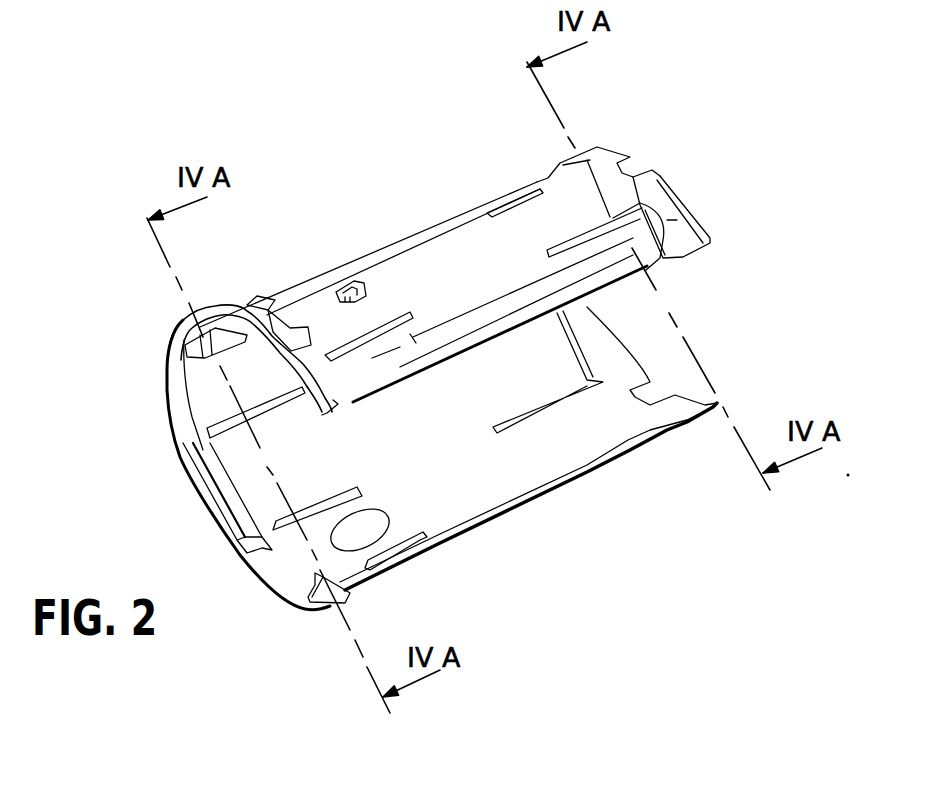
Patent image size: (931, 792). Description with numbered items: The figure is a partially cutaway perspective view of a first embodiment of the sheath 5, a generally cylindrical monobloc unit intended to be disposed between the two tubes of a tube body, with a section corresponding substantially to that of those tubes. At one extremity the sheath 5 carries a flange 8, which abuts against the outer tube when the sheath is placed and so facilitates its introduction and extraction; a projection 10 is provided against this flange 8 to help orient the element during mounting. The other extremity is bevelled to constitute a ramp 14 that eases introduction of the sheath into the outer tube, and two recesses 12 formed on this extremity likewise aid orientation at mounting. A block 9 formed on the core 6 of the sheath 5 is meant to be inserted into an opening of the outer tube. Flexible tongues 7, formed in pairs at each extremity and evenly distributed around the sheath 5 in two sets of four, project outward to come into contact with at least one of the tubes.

The sheath 5 is at (405, 172).
The core 6 is at (455, 246).
The flexible tongues 7 is at (442, 439).
The flange 8 is at (178, 415).
The block 9 is at (350, 280).
The projection 10 is at (252, 300).
The recesses 12 is at (642, 163).
The ramp 14 is at (689, 213).